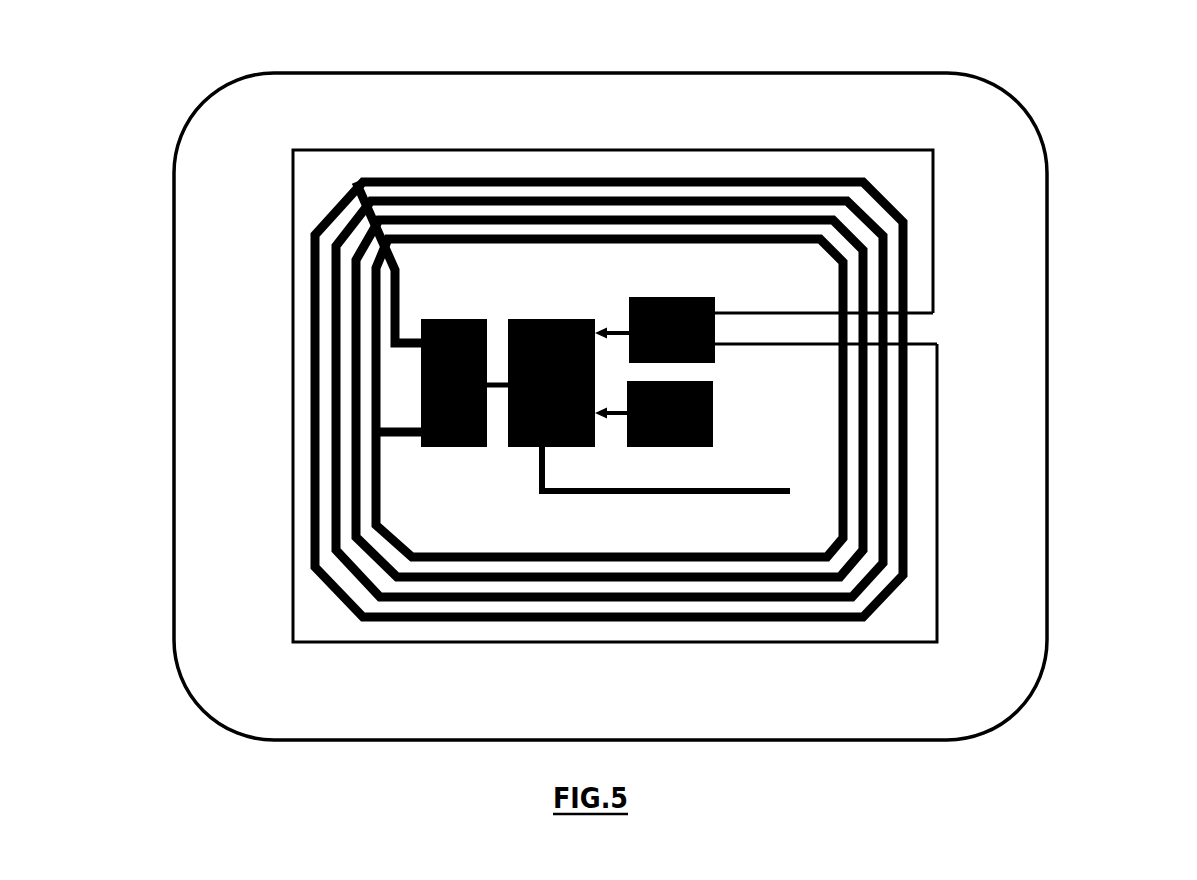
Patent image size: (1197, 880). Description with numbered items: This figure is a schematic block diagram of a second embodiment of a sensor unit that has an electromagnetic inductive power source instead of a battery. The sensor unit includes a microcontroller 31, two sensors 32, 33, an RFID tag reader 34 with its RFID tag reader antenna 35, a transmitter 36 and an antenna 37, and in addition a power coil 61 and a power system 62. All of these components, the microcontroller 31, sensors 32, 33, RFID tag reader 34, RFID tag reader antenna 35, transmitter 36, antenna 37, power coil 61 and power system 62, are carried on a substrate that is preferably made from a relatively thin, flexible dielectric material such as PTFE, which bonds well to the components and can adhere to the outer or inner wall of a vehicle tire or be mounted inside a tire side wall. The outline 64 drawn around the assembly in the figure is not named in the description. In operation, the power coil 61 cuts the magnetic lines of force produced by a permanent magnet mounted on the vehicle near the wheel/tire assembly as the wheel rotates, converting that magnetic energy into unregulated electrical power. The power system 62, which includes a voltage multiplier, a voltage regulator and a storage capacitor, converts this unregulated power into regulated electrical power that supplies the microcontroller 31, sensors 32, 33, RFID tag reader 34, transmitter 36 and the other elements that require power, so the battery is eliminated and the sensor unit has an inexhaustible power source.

The microcontroller 31 is at (665, 231).
The sensor 32 is at (755, 540).
The sensor 33 is at (697, 447).
The RFID tag reader 34 is at (677, 297).
The RFID tag reader antenna 35 is at (935, 237).
The transmitter 36 is at (582, 319).
The antenna 37 is at (533, 483).
The power coil 61 is at (890, 455).
The power system 62 is at (443, 318).
The housing 64 is at (1017, 623).